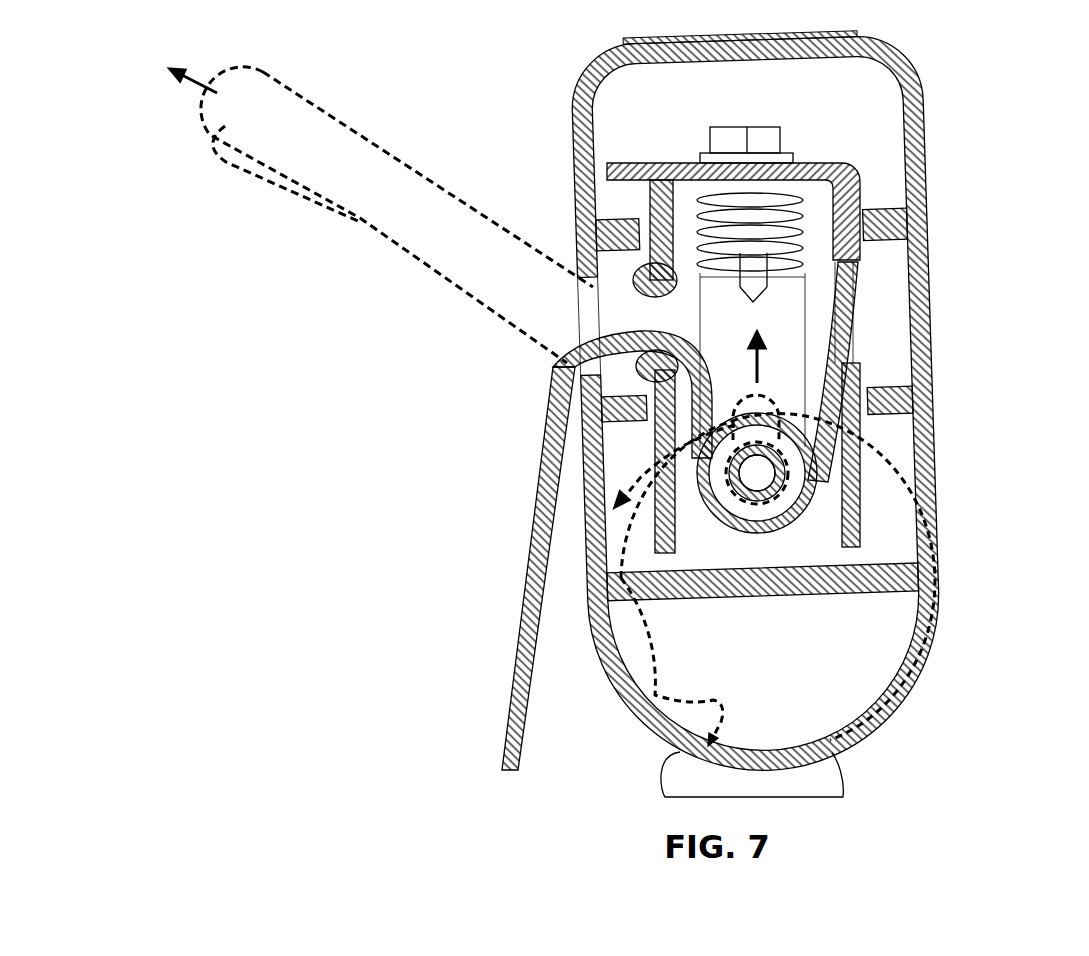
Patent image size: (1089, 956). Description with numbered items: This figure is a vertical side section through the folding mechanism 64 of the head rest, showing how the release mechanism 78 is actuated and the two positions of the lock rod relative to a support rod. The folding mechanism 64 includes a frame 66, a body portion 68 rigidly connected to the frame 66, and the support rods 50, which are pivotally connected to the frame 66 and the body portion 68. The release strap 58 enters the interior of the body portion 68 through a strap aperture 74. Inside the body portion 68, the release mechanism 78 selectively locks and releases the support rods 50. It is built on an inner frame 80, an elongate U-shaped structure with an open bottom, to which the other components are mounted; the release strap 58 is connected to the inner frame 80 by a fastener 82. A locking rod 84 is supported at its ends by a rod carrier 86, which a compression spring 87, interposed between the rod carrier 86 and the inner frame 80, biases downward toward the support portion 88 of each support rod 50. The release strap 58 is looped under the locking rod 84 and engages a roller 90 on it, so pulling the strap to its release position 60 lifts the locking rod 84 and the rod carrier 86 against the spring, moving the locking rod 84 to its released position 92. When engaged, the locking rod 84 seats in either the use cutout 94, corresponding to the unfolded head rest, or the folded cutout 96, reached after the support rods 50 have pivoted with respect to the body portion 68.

The support rods 50 is at (835, 780).
The release strap 58 is at (520, 625).
The release position 60 is at (298, 190).
The folding mechanism 64 is at (965, 172).
The frame 66 is at (630, 38).
The body portion 68 is at (925, 90).
The strap aperture 74 is at (585, 274).
The release mechanism 78 is at (893, 347).
The inner frame 80 is at (655, 427).
The fastener 82 is at (708, 135).
The locking rod 84 is at (753, 474).
The rod carrier 86 is at (807, 317).
The compression spring 87 is at (805, 205).
The support portion 88 is at (900, 487).
The roller 90 is at (780, 418).
The released position 92 is at (770, 412).
The use cutout 94 is at (783, 490).
The folded cutout 96 is at (723, 713).